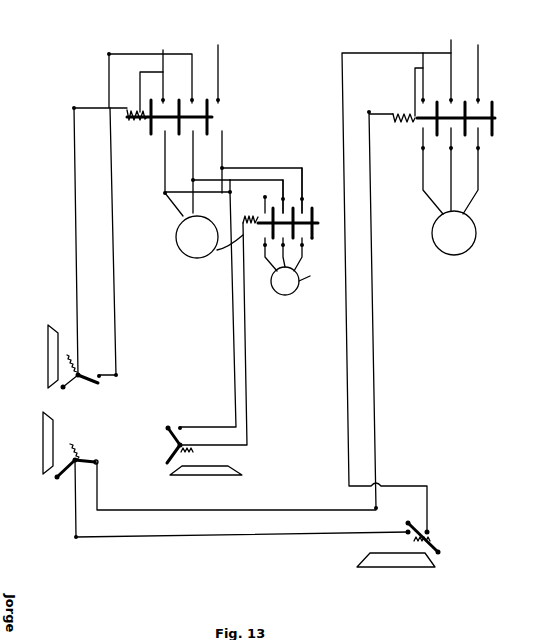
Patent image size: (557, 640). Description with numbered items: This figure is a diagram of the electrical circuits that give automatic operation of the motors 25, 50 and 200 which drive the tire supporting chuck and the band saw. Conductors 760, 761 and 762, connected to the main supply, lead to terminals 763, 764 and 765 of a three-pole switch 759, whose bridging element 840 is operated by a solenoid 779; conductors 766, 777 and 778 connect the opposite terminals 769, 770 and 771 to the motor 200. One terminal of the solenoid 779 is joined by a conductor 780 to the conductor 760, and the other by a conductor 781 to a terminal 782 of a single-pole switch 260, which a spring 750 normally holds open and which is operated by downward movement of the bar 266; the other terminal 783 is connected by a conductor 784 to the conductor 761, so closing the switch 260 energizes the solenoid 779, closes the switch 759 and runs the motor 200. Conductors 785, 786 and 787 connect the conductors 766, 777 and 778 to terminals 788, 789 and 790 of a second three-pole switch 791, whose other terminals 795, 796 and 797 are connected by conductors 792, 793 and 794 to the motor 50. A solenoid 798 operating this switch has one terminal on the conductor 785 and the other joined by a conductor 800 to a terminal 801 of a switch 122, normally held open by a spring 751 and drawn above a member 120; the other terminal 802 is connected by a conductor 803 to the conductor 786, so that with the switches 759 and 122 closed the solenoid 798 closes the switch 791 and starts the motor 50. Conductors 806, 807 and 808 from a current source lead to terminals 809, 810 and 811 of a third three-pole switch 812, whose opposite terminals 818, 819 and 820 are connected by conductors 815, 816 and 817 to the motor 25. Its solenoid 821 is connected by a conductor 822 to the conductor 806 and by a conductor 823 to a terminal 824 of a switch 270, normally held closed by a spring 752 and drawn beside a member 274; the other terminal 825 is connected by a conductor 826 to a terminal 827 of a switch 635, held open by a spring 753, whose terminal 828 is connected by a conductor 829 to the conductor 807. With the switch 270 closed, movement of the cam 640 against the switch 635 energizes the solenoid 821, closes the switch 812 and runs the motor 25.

The electrical conductor 760 is at (161, 66).
The electrical conductor 761 is at (157, 66).
The electrical conductor 762 is at (223, 66).
The terminal 763 is at (166, 98).
The terminal 764 is at (194, 99).
The terminal 765 is at (220, 100).
The bridging element 840 is at (212, 117).
The three-pole switch 759 is at (141, 122).
The solenoid 779 is at (127, 108).
The conductor 780 is at (140, 72).
The terminal 769 is at (179, 162).
The terminal 770 is at (205, 172).
The terminal 771 is at (224, 134).
The conductor 766 is at (165, 186).
The conductor 777 is at (194, 179).
The conductor 778 is at (224, 167).
The conductor 787 is at (262, 168).
The conductor 786 is at (256, 189).
The conductor 785 is at (232, 192).
The conductor 803 is at (234, 345).
The switch 122 is at (166, 427).
The terminal 802 is at (183, 425).
The terminal 801 is at (177, 445).
The spring 751 is at (182, 470).
The switch base 120 is at (212, 476).
The motor 200 is at (197, 237).
The solenoid 798 is at (223, 250).
The conductor 800 is at (246, 394).
The three-pole switch 791 is at (314, 224).
The terminal 795 is at (252, 228).
The terminal 788 is at (268, 199).
The terminal 789 is at (288, 194).
The terminal 790 is at (305, 206).
The conductor 793 is at (306, 240).
The terminal 797 is at (300, 262).
The terminal 796 is at (278, 258).
The conductor 792 is at (268, 262).
The motor 50 is at (285, 281).
The conductor 794 is at (319, 274).
The conductor 829 is at (344, 335).
The conductor 806 is at (430, 63).
The conductor 807 is at (453, 60).
The conductor 808 is at (481, 64).
The conductor 822 is at (413, 88).
The conductor 823 is at (377, 276).
The solenoid 821 is at (403, 124).
The three-pole switch 812 is at (499, 112).
The terminal 809 is at (438, 90).
The terminal 810 is at (466, 91).
The terminal 811 is at (480, 98).
The terminal 818 is at (425, 146).
The terminal 819 is at (453, 146).
The terminal 820 is at (480, 138).
The conductor 815 is at (422, 176).
The conductor 816 is at (452, 176).
The conductor 817 is at (480, 172).
The motor 25 is at (454, 233).
The conductor 781 is at (76, 250).
The conductor 784 is at (114, 272).
The bar 266 is at (48, 349).
The spring 750 is at (68, 362).
The terminal 782 is at (84, 374).
The terminal 783 is at (106, 380).
The single-pole switch 260 is at (66, 389).
The switch plate 274 is at (43, 455).
The spring 752 is at (69, 442).
The terminal 824 is at (97, 459).
The terminal 825 is at (77, 463).
The switch 270 is at (58, 480).
The conductor 826 is at (290, 531).
The terminal 827 is at (405, 530).
The terminal 828 is at (430, 532).
The spring 753 is at (412, 542).
The switch 635 is at (440, 550).
The cam 640 is at (398, 568).